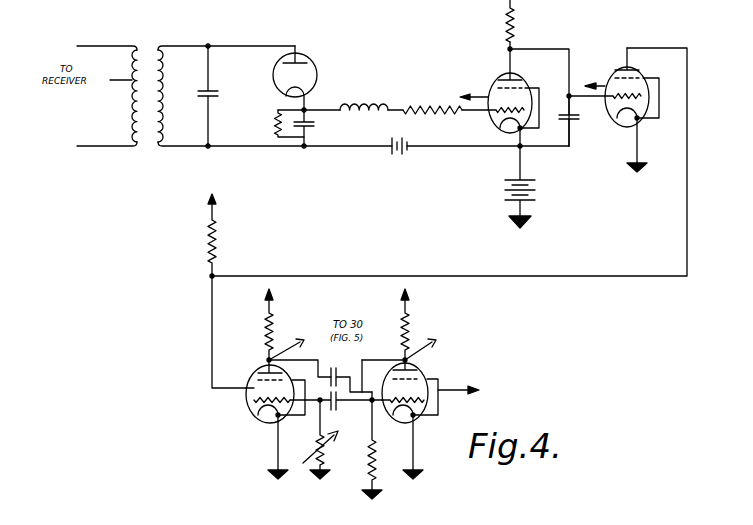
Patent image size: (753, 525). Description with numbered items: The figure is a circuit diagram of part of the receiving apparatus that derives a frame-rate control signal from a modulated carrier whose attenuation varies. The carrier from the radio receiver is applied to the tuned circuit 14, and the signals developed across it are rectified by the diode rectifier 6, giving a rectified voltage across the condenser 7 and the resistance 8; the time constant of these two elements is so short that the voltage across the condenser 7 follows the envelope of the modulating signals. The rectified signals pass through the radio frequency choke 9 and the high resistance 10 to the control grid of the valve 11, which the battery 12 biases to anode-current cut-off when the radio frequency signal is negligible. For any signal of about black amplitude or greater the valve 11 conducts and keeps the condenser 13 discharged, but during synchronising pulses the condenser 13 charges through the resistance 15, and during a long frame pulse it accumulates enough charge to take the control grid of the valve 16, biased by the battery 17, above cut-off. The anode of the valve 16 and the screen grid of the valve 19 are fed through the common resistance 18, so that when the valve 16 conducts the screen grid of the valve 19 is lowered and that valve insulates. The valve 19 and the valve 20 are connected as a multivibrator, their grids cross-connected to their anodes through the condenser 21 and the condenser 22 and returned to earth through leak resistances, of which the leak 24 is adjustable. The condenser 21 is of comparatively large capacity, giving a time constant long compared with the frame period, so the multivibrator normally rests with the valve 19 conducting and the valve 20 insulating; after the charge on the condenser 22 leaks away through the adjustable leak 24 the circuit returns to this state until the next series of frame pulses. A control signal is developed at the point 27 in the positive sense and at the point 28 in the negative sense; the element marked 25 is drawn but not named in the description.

The diode rectifier 6 is at (300, 56).
The condenser 7 is at (313, 128).
The resistance 8 is at (275, 124).
The radio frequency choke 9 is at (372, 105).
The high resistance 10 is at (445, 108).
The valve 11 is at (493, 85).
The battery 12 is at (408, 142).
The condenser 13 is at (578, 120).
The tuned circuit 14 is at (186, 50).
The resistance 15 is at (514, 31).
The valve 16 is at (620, 67).
The battery 17 is at (534, 201).
The common resistance 18 is at (215, 247).
The valve 19 is at (257, 369).
The valve 20 is at (427, 375).
The condenser 21 is at (342, 366).
The condenser 22 is at (340, 411).
The leak resistance 24 is at (326, 458).
The resistor 25 is at (378, 459).
The point 27 is at (288, 349).
The point 28 is at (426, 352).